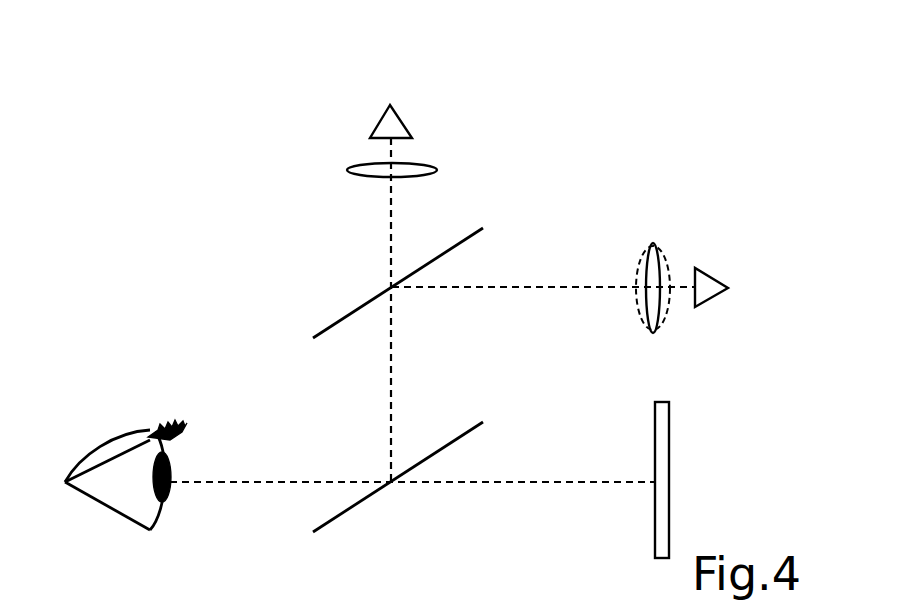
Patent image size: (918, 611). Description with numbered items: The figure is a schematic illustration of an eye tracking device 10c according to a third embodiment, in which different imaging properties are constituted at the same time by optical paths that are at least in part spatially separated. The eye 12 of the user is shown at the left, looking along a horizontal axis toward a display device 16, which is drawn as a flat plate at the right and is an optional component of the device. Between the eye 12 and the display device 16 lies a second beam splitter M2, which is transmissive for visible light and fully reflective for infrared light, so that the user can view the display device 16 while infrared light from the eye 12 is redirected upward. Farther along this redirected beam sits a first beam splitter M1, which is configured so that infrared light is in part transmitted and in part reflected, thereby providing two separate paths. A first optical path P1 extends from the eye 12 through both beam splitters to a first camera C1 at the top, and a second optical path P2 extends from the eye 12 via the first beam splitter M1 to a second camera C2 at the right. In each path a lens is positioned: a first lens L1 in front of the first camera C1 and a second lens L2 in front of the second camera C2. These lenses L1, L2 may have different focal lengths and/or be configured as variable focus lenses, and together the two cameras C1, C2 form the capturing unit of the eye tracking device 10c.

The eye tracking device 10c is at (226, 115).
The eye 12 is at (90, 436).
The display device 16 is at (669, 453).
The first camera C1 is at (397, 103).
The second camera C2 is at (708, 297).
The first lens L1 is at (357, 162).
The second lens L2 is at (660, 248).
The first beam splitter M1 is at (321, 335).
The second beam splitter M2 is at (357, 505).
The first optical path P1 is at (395, 205).
The second optical path P2 is at (533, 287).